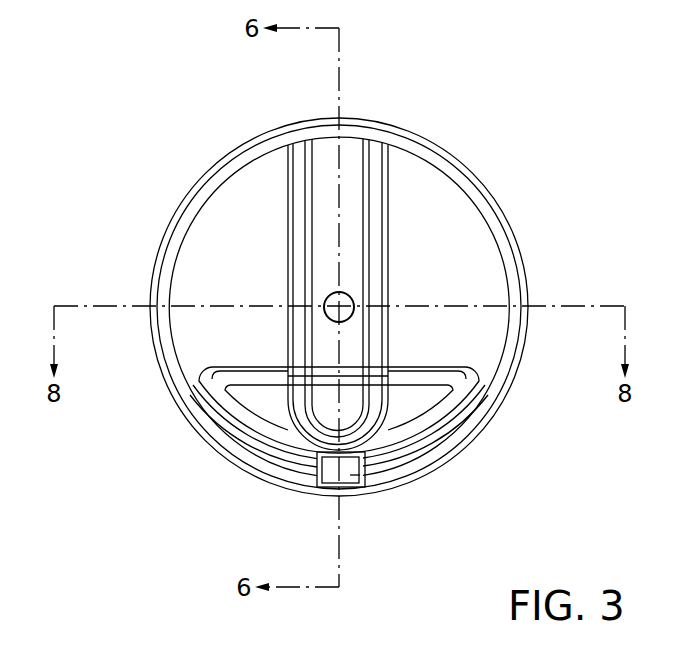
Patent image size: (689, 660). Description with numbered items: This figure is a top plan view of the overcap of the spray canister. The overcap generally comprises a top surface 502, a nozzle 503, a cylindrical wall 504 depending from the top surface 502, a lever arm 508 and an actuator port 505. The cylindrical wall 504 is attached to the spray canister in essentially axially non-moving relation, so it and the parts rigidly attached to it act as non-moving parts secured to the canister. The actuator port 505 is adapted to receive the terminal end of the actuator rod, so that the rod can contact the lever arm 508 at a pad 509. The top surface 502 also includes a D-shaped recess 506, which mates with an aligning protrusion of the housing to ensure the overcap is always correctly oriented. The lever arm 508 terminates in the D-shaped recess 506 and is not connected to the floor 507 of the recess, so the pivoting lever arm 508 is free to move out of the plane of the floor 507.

The top surface 502 is at (477, 288).
The nozzle 503 is at (318, 321).
The cylindrical wall 504 is at (448, 164).
The actuator port 505 is at (366, 483).
The D-shaped recess 506 is at (428, 405).
The floor 507 is at (286, 420).
The lever arm 508 is at (322, 163).
The pad 509 is at (323, 422).